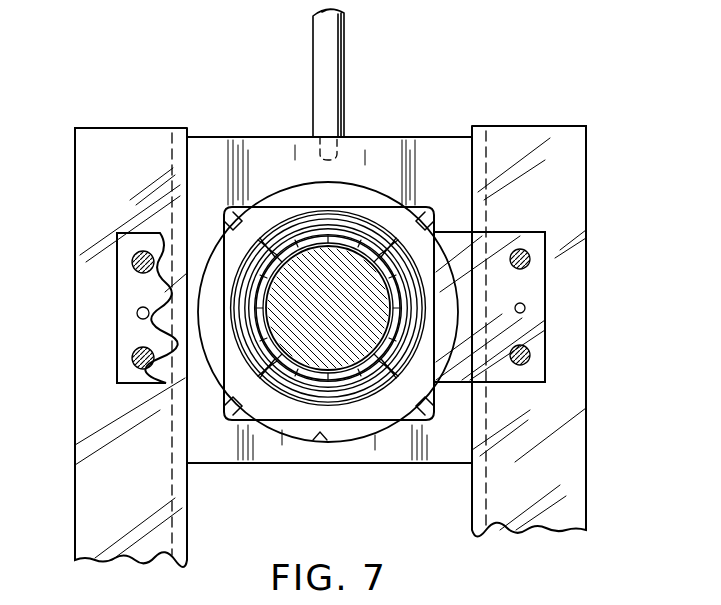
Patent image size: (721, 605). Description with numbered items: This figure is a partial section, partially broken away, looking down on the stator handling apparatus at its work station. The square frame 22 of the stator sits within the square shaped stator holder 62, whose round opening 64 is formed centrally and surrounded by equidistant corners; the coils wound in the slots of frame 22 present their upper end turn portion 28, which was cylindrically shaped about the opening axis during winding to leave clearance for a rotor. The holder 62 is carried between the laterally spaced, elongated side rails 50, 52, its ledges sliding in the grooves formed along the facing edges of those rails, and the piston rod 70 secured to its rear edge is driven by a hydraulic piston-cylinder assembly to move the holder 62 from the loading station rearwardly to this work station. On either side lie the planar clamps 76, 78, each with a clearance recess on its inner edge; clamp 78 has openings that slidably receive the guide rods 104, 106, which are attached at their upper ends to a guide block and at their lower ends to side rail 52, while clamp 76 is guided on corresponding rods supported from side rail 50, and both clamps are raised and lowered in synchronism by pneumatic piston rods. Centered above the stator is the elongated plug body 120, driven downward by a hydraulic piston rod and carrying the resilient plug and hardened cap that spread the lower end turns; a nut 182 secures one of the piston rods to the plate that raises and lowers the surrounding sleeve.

The square frame 22 is at (402, 208).
The end turn portion 28 is at (297, 228).
The side rail 50 is at (93, 533).
The side rail 52 is at (572, 495).
The stator holder 62 is at (272, 457).
The round opening 64 is at (328, 441).
The piston rod 70 is at (340, 68).
The planar clamp 76 is at (126, 333).
The planar clamp 78 is at (533, 326).
The guide rod 104 is at (530, 252).
The guide rod 106 is at (526, 362).
The plug body 120 is at (347, 319).
The nut 182 is at (433, 278).